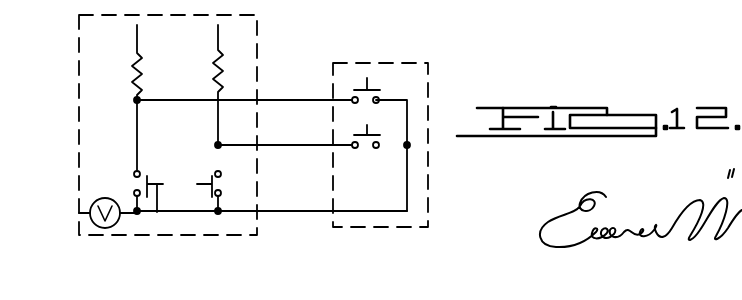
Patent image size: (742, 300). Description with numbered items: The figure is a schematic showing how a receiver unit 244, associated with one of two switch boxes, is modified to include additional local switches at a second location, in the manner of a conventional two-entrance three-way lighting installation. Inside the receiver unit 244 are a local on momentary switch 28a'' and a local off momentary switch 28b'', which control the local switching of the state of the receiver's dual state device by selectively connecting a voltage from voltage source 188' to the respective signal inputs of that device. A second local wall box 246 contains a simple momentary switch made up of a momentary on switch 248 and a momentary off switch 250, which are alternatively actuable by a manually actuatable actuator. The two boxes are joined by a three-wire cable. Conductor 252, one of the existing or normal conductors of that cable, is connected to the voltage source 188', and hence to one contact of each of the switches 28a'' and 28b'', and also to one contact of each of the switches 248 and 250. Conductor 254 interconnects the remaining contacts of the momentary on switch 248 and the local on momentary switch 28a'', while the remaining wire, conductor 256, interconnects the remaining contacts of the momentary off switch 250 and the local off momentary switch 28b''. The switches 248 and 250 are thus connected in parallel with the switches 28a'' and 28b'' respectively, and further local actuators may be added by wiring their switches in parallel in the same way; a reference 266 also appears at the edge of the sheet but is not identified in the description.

The voltage source 188' is at (71, 208).
The local on momentary switch 28a'' is at (114, 229).
The local off momentary switch 28b'' is at (214, 233).
The receiver unit 244 is at (259, 44).
The second local wall box 246 is at (430, 79).
The momentary on switch 248 is at (367, 78).
The momentary off switch 250 is at (368, 130).
The conductor 252 is at (293, 212).
The conductor 254 is at (283, 100).
The conductor 256 is at (305, 145).
The conductor 266 is at (573, 7).